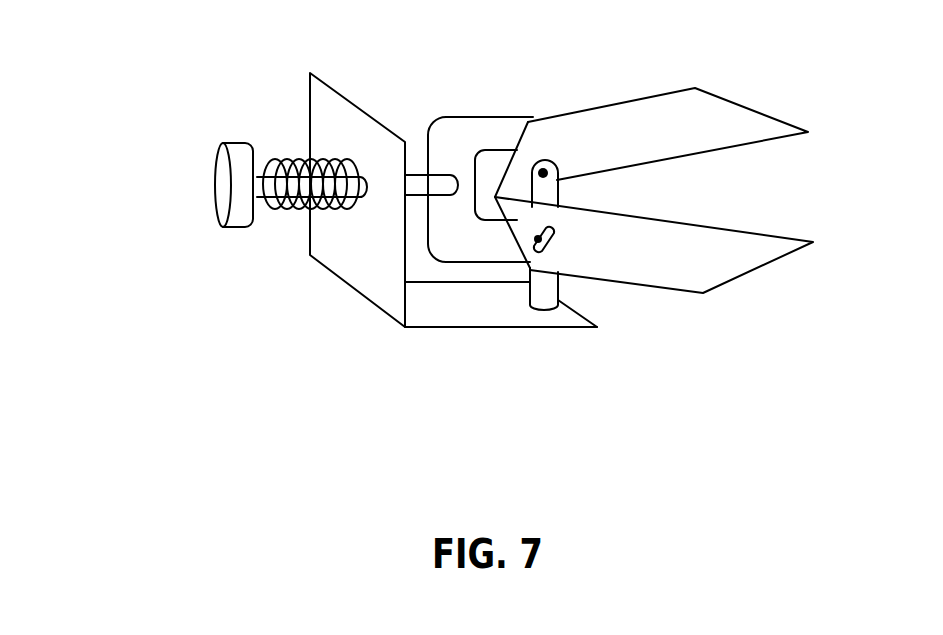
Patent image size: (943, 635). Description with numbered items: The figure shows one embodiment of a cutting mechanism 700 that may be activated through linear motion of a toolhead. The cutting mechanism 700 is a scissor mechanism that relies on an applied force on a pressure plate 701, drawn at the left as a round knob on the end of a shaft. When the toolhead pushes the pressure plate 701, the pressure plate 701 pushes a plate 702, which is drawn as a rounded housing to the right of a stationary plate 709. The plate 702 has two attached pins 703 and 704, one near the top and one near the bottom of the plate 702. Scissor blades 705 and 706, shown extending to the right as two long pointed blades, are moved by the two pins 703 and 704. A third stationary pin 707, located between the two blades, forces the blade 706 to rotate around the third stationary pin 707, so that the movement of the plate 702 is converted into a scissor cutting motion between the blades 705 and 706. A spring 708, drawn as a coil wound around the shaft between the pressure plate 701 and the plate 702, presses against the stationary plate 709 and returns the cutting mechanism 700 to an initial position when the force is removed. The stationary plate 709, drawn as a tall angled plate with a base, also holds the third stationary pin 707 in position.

The cutting mechanism 700 is at (108, 168).
The pressure plate 701 is at (220, 175).
The plate 702 is at (468, 135).
The pin 703 is at (542, 135).
The pin 704 is at (537, 225).
The scissor blade 705 is at (677, 267).
The scissor blade 706 is at (683, 110).
The third stationary pin 707 is at (557, 180).
The spring 708 is at (297, 160).
The stationary plate 709 is at (352, 258).